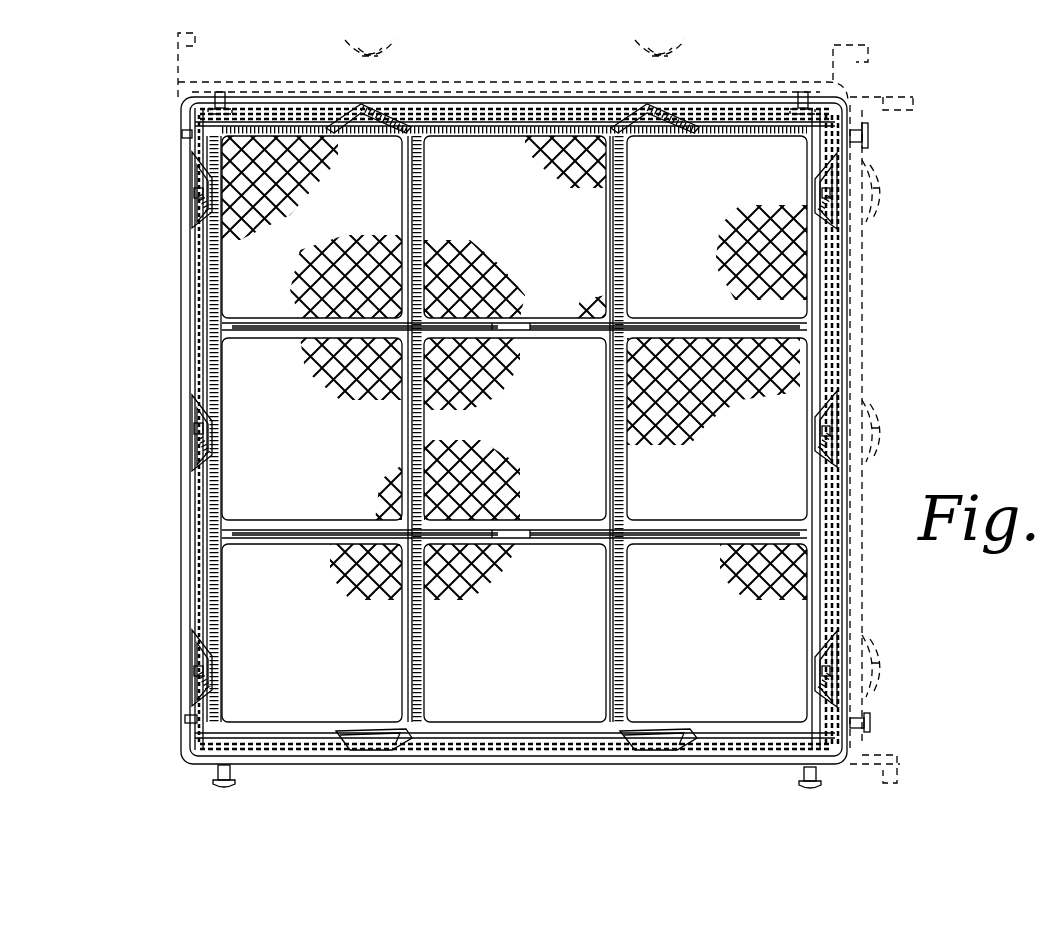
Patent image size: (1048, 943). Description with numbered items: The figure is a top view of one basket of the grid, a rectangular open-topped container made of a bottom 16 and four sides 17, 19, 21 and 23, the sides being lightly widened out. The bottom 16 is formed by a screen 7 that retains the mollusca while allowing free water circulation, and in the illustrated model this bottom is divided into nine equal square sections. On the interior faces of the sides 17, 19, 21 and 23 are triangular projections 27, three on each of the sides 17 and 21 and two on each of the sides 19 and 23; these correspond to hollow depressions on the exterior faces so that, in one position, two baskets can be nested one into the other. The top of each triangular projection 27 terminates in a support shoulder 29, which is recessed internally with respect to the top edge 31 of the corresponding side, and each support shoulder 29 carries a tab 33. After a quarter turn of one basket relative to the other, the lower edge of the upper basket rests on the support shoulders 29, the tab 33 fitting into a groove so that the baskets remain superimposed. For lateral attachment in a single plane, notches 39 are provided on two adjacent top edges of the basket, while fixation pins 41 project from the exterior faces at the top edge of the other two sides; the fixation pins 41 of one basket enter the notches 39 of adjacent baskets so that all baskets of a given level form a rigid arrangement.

The screen 7 is at (483, 283).
The bottom 16 is at (252, 726).
The side 17 is at (200, 698).
The side 19 is at (238, 112).
The side 21 is at (833, 126).
The side 23 is at (805, 746).
The triangular projection 27 is at (620, 122).
The support shoulder 29 is at (196, 690).
The top edge 31 is at (180, 325).
The tab 33 is at (205, 430).
The notch 39 is at (224, 90).
The fixation pin 41 is at (868, 137).